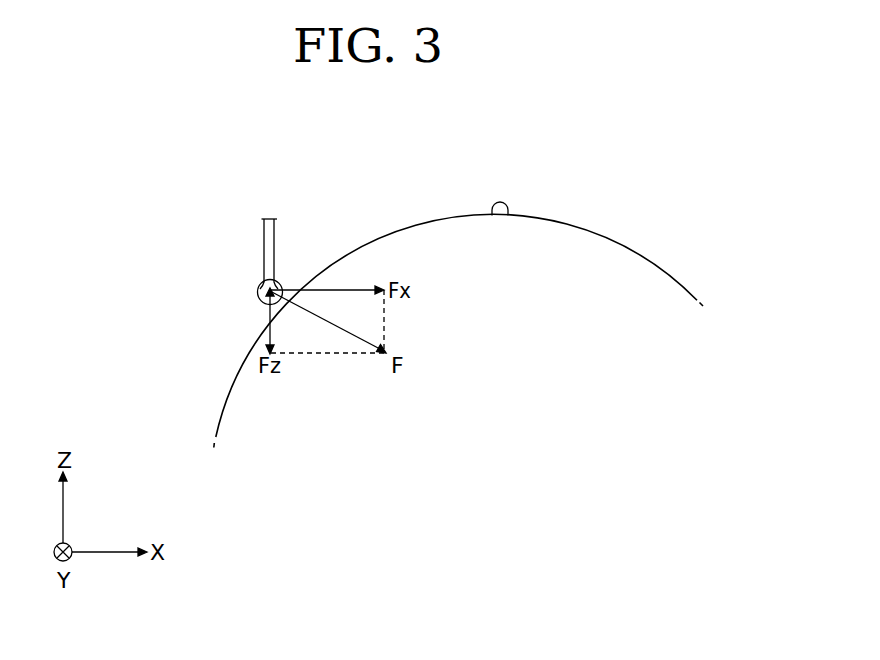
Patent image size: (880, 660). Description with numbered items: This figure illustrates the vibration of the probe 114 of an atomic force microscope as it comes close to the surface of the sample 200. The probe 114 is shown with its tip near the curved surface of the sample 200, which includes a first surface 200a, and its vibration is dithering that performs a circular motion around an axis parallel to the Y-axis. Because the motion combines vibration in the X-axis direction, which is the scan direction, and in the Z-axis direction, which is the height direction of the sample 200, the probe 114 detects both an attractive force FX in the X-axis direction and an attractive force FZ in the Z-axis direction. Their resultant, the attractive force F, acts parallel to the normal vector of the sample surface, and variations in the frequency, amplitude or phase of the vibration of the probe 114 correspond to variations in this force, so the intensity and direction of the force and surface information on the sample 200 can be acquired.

The probe 114 is at (267, 233).
The sample 200 is at (617, 260).
The first surface 200a is at (505, 218).